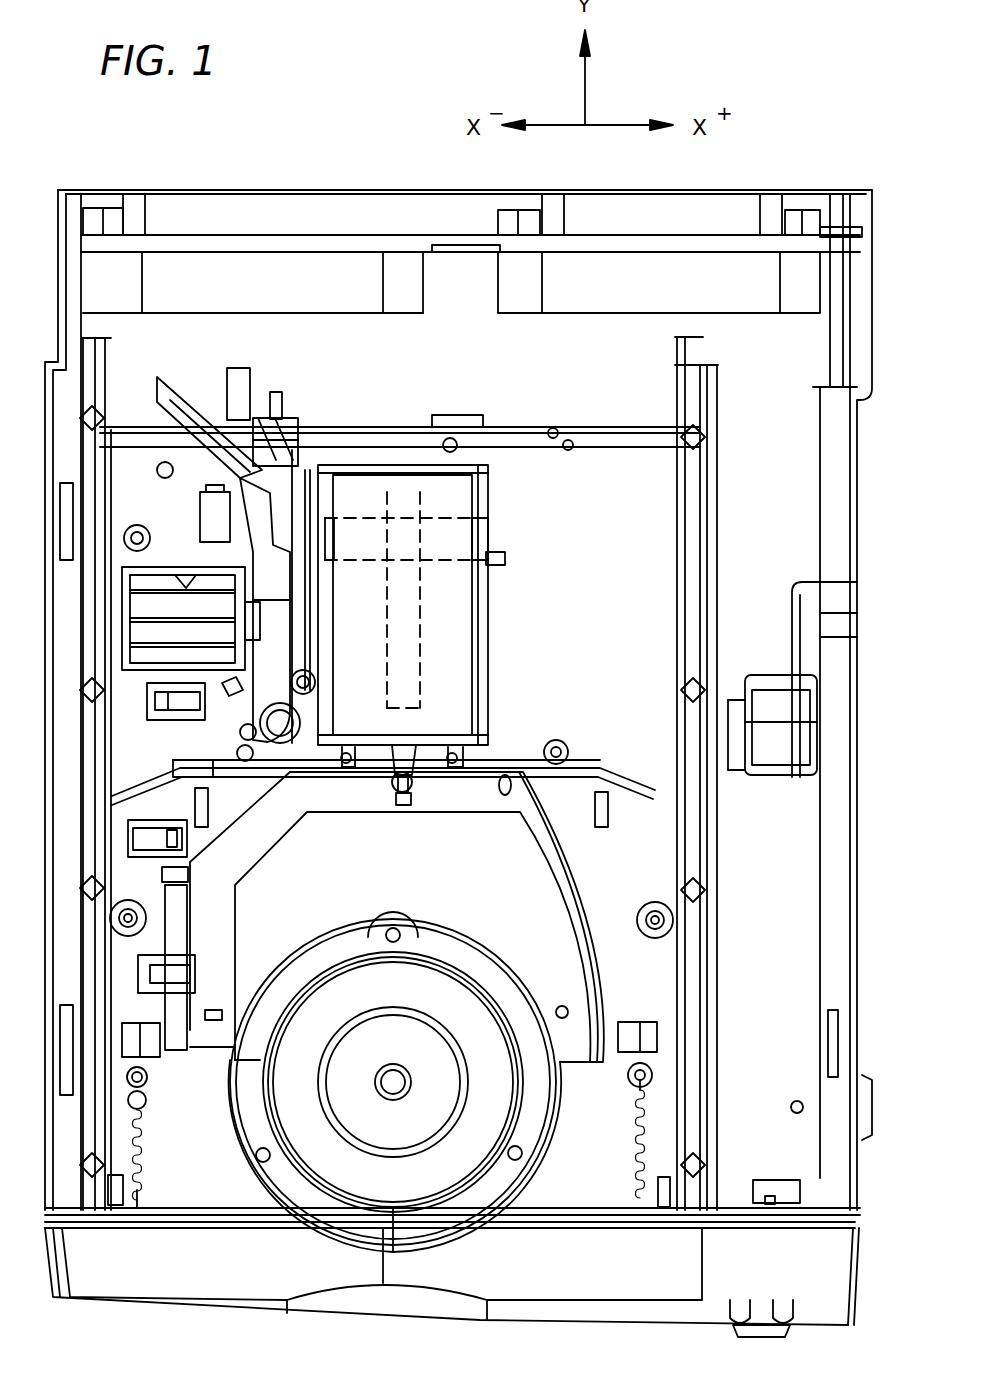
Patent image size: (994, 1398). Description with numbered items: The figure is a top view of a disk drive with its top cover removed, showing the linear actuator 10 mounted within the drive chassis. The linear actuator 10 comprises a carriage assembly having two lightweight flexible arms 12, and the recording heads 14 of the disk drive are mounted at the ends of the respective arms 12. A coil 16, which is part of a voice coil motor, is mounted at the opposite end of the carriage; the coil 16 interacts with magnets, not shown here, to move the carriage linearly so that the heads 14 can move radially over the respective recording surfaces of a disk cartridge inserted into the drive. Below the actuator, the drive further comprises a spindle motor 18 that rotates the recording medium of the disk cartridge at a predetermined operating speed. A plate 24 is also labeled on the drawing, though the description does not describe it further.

The linear actuator 10 is at (442, 613).
The flexible arms 12 is at (413, 753).
The recording heads 14 is at (402, 808).
The coil 16 is at (450, 535).
The spindle motor 18 is at (497, 1072).
The base plate 24 is at (543, 909).